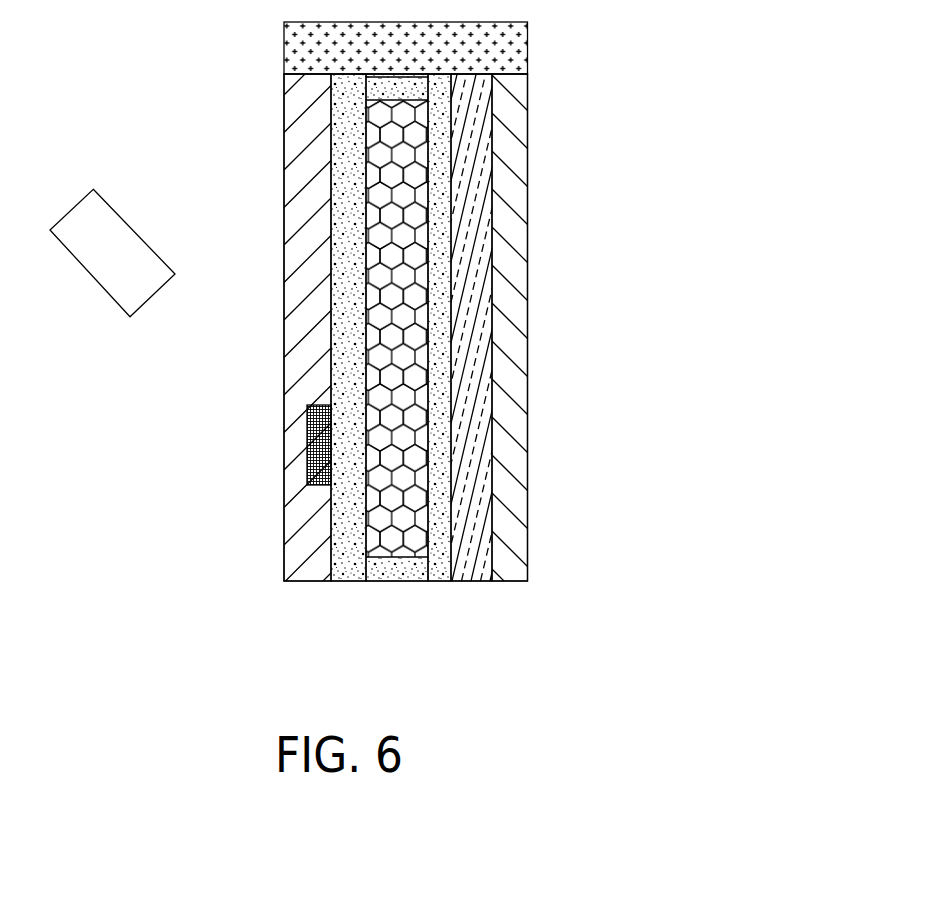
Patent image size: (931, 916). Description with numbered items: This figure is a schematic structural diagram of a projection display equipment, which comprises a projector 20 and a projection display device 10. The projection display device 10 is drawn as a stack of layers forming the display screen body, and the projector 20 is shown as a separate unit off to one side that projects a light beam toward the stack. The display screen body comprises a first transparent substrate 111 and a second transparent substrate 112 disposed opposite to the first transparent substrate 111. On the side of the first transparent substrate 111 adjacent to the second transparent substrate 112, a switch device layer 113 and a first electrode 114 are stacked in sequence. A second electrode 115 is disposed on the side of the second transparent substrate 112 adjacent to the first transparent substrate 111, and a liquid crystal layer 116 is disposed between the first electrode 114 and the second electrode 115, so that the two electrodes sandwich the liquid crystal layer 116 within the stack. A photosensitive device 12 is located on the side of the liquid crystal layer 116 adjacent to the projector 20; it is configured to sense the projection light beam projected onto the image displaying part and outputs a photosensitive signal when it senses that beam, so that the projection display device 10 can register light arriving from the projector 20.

The projection display device 10 is at (500, 628).
The photosensitive device 12 is at (313, 448).
The projector 20 is at (87, 275).
The first transparent substrate 111 is at (506, 103).
The second transparent substrate 112 is at (308, 357).
The switch device layer 113 is at (475, 147).
The first electrode 114 is at (437, 242).
The second electrode 115 is at (347, 386).
The liquid crystal layer 116 is at (405, 319).